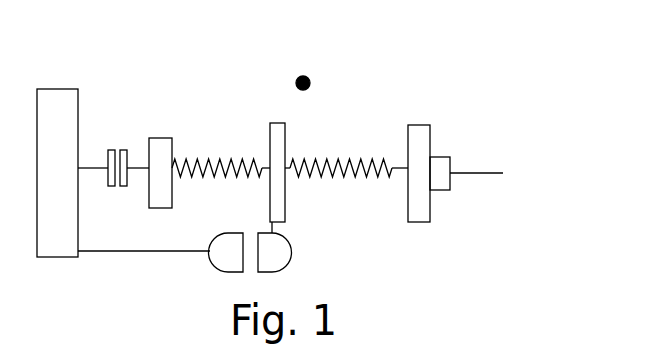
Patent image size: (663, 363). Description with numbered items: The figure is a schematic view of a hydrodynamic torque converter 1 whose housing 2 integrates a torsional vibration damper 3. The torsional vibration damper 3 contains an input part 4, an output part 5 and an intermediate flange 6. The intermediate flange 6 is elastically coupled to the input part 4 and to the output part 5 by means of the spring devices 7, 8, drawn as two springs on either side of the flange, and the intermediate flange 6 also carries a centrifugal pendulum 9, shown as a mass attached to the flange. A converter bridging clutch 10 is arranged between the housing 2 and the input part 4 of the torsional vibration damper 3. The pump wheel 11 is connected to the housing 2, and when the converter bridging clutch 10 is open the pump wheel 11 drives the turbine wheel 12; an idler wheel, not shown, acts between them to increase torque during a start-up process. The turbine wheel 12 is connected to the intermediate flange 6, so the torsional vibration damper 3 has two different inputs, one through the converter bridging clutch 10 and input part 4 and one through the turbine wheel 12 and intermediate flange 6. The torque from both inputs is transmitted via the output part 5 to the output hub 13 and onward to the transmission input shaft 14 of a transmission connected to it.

The hydrodynamic torque converter 1 is at (519, 76).
The housing 2 is at (123, 173).
The torsional vibration damper 3 is at (393, 73).
The input part 4 is at (160, 142).
The output part 5 is at (420, 133).
The intermediate flange 6 is at (278, 203).
The spring device 7 is at (227, 146).
The spring device 8 is at (328, 146).
The centrifugal pendulum 9 is at (277, 122).
The converter bridging clutch 10 is at (115, 148).
The pump wheel 11 is at (223, 260).
The turbine wheel 12 is at (278, 257).
The output hub 13 is at (435, 157).
The transmission input shaft 14 is at (492, 171).